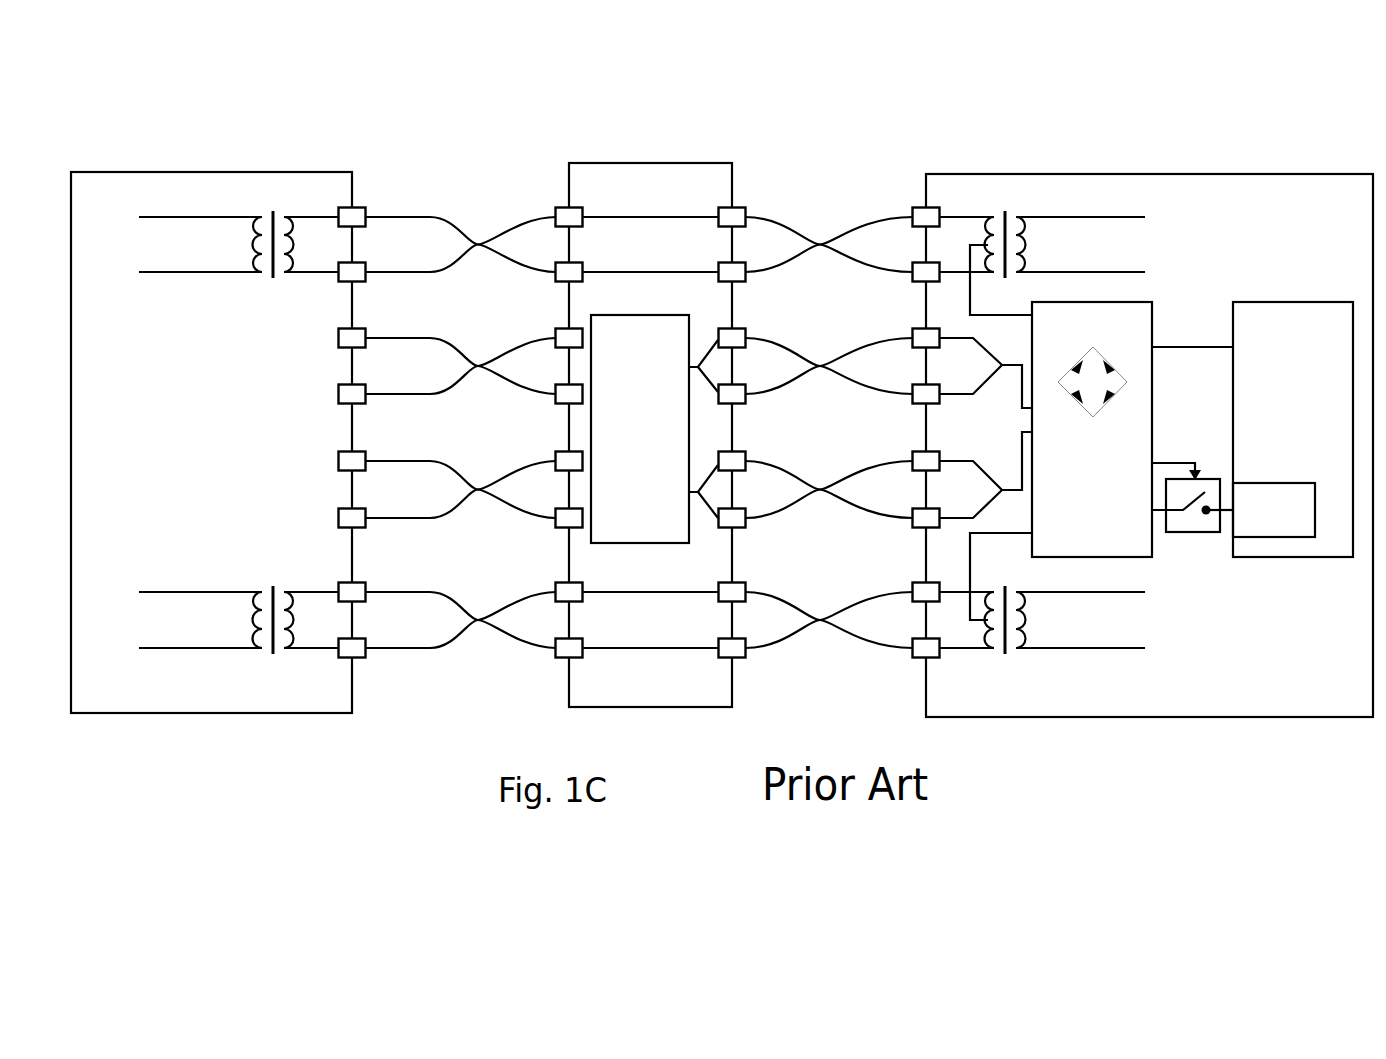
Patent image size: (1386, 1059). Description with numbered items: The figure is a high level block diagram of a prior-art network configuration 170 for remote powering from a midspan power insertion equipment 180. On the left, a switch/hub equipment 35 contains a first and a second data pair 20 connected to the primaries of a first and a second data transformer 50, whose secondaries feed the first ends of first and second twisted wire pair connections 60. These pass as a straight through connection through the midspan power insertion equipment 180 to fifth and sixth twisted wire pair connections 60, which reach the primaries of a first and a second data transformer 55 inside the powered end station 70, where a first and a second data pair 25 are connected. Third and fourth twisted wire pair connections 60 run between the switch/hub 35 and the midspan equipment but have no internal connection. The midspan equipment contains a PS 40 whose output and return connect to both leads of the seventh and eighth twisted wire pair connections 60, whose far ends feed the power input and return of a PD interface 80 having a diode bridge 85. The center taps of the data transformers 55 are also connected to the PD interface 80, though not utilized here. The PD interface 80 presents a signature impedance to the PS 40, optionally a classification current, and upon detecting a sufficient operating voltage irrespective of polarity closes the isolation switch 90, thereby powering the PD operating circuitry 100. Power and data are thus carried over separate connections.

The network configuration 170 is at (650, 57).
The midspan power insertion equipment 180 is at (650, 163).
The data pair 20 is at (173, 272).
The data transformer 50 is at (273, 272).
The switch/hub equipment 35 is at (212, 713).
The twisted wire pair connections 60 is at (430, 273).
The PS 40 is at (640, 545).
The data transformer 55 is at (1003, 213).
The data pair 25 is at (1080, 217).
The powered end station 70 is at (1148, 717).
The PD interface 80 is at (1152, 323).
The diode bridge 85 is at (1127, 382).
The isolation switch 90 is at (1198, 533).
The PD operating circuitry 100 is at (1293, 302).